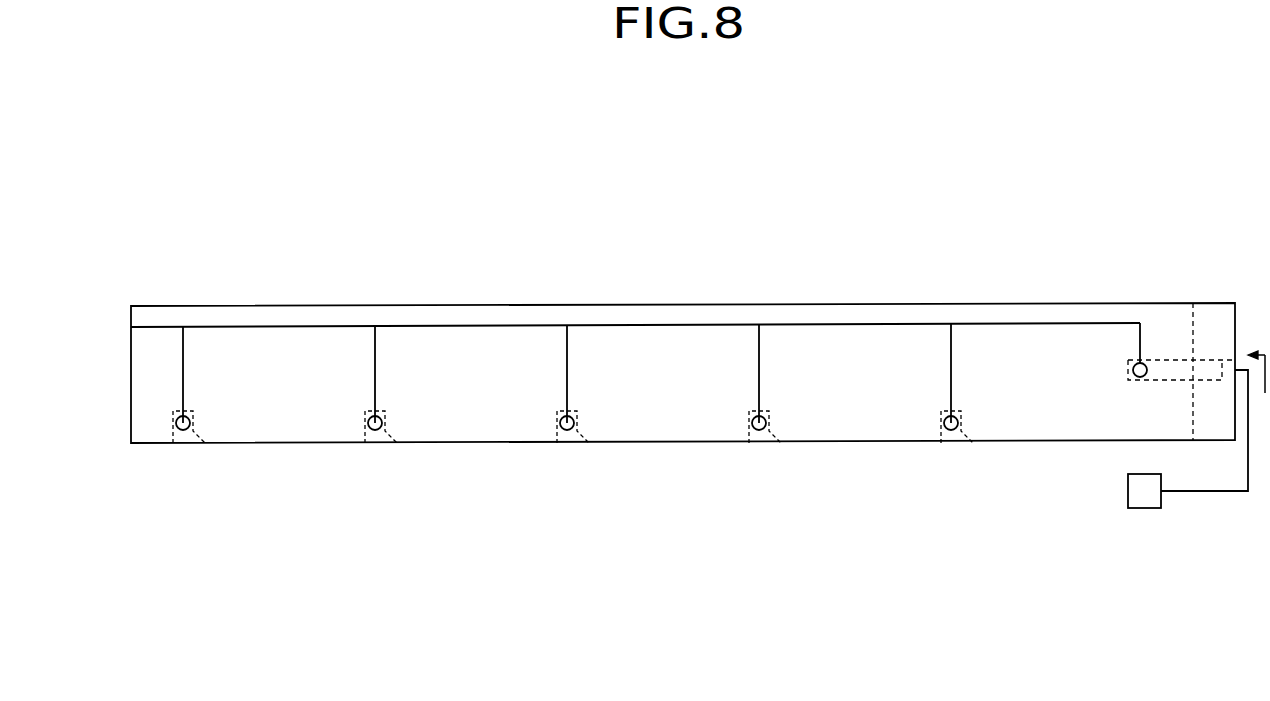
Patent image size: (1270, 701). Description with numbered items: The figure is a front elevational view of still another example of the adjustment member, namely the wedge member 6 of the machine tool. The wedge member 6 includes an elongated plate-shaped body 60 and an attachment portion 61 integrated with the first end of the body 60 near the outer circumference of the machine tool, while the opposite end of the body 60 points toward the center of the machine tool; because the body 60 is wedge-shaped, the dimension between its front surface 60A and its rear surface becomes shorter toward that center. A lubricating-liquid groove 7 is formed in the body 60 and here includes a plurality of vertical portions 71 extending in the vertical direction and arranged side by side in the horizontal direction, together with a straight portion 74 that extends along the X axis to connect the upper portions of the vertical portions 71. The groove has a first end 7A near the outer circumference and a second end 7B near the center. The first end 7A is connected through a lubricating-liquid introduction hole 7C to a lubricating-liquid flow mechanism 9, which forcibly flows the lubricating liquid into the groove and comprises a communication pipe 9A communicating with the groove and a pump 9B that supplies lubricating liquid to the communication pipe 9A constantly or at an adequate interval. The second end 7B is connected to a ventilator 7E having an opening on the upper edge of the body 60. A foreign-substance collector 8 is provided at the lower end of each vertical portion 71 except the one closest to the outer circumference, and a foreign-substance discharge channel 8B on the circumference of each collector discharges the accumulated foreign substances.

The wedge member 6 is at (826, 234).
The lubricating-liquid groove 7 is at (745, 322).
The first end 7A is at (1141, 363).
The second end 7B is at (183, 411).
The lubricating-liquid introduction hole 7C is at (1210, 358).
The ventilator 7E is at (150, 326).
The body 60 is at (572, 311).
The front surface 60A is at (688, 320).
The attachment portion 61 is at (1187, 323).
The vertical portion 71 is at (186, 362).
The straight portion 74 is at (860, 322).
The foreign-substance collector 8 is at (193, 421).
The foreign-substance discharge channel 8B is at (207, 446).
The lubricating-liquid flow mechanism 9 is at (1228, 564).
The communication pipe 9A is at (1215, 495).
The pump 9B is at (1141, 510).